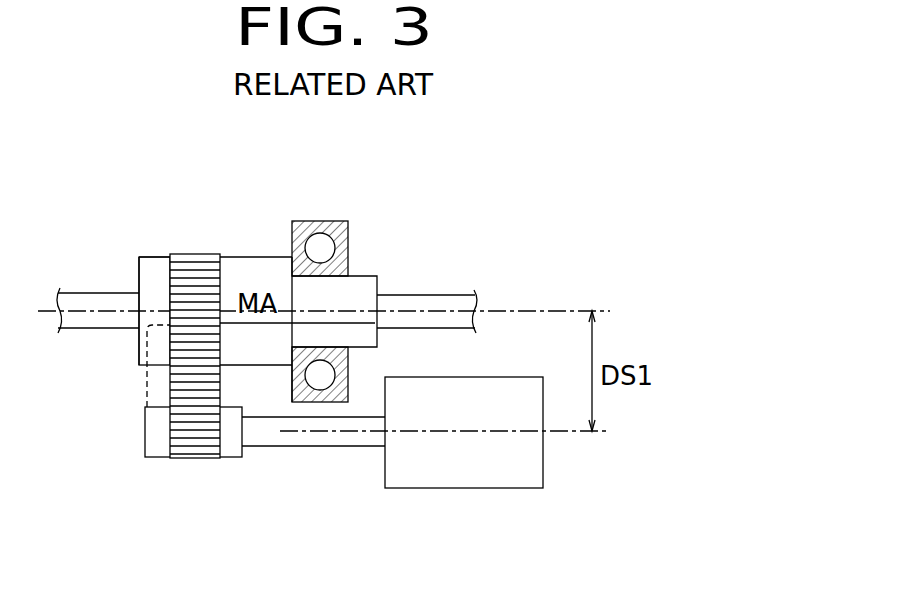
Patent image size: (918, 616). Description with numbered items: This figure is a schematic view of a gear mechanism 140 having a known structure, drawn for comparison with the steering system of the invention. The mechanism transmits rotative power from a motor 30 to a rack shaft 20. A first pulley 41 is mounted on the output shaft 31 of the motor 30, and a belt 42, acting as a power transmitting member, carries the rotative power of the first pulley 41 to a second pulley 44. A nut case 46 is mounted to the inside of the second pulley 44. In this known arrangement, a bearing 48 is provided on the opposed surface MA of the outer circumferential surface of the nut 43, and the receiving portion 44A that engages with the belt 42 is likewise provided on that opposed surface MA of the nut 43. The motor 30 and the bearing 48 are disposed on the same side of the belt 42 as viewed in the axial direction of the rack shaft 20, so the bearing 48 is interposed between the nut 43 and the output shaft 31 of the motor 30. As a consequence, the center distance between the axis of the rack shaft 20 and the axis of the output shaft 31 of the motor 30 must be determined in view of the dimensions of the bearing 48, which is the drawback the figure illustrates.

The gear mechanism having a known structure 140 is at (447, 213).
The rack shaft 20 is at (452, 294).
The motor 30 is at (468, 489).
The output shaft 31 is at (320, 447).
The first pulley 41 is at (157, 458).
The belt 42 is at (210, 256).
The nut 43 is at (256, 257).
The second pulley 44 is at (139, 274).
The receiving portion 44A is at (162, 255).
The nut case 46 is at (362, 276).
The bearing 48 is at (332, 221).